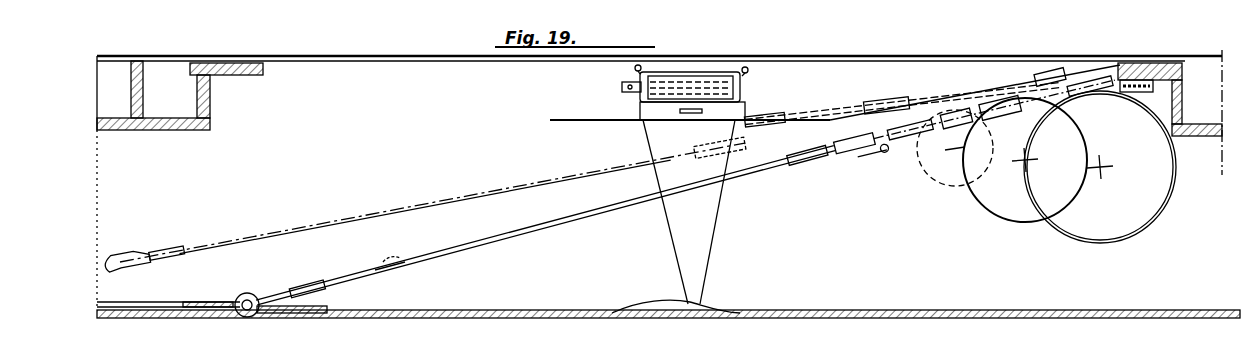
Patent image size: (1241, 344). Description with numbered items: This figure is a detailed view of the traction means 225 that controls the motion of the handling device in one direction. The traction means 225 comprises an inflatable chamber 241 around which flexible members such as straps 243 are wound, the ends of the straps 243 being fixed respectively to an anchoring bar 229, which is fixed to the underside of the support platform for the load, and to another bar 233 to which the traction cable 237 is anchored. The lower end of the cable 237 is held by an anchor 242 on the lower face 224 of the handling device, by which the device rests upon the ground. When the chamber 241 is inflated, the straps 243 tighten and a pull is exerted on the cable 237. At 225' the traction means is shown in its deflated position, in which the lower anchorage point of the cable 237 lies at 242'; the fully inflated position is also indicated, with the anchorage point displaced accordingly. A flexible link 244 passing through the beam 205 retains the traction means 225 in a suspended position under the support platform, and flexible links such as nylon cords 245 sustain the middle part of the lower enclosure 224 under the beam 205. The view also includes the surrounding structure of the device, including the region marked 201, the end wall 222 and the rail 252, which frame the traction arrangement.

The upper wall / ceiling structure 201 is at (1126, 57).
The beam 205 is at (637, 92).
The end wall 222 is at (1210, 137).
The lower face 224 is at (855, 310).
The traction means 225 is at (1034, 248).
The deflated position of the traction means 225' is at (954, 166).
The anchoring bar 229 is at (1143, 93).
The bar 233 is at (882, 146).
The traction cable 237 is at (504, 234).
The chamber 241 is at (985, 206).
The anchor 242 is at (263, 291).
The lower anchorage point 242' is at (425, 204).
The strap 243 is at (1106, 88).
The flexible link 244 is at (766, 121).
The nylon cord 245 is at (701, 297).
The rail 252 is at (272, 323).